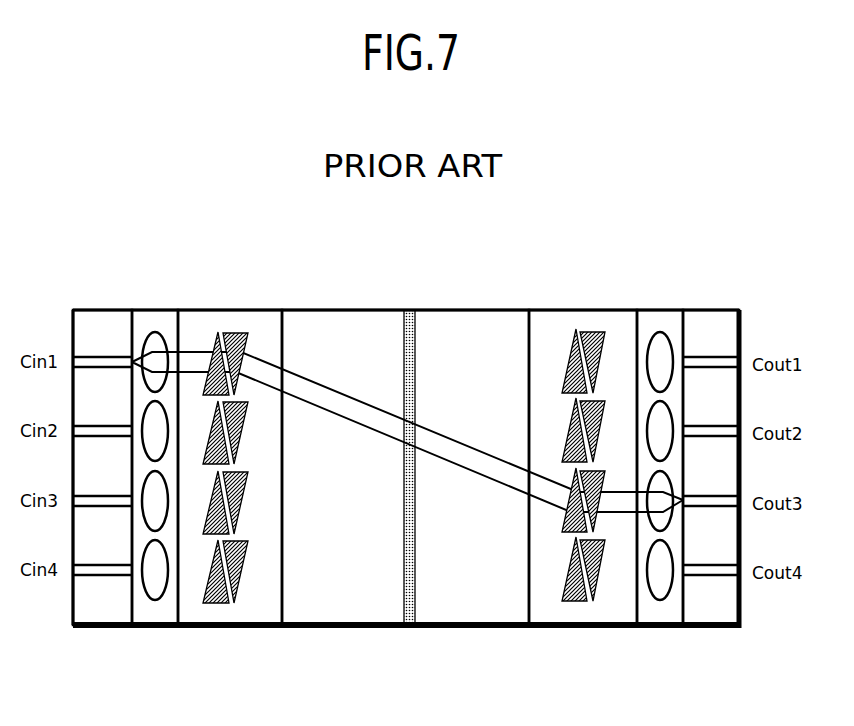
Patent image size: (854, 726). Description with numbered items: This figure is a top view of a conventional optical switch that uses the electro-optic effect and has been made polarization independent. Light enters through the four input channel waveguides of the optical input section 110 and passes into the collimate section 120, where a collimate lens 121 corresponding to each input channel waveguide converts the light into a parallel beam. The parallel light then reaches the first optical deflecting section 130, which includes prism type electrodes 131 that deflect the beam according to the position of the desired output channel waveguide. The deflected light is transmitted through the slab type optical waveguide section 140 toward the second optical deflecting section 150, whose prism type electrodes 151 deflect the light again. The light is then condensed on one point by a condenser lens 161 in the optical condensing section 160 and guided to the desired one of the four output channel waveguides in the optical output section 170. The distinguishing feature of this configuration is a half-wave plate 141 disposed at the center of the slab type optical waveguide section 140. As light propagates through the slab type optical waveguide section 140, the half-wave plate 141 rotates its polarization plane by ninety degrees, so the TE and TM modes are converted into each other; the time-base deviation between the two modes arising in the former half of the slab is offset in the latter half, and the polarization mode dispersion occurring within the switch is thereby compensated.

The optical input section 110 is at (73, 283).
The collimate section 120 is at (132, 283).
The first optical deflecting section 130 is at (178, 283).
The slab type optical waveguide section 140 is at (282, 283).
The second optical deflecting section 150 is at (529, 283).
The optical condensing section 160 is at (683, 283).
The optical output section 170 is at (683, 283).
The collimate lens 121 is at (152, 612).
The prism type electrode 131 is at (228, 612).
The half-wave plate 141 is at (407, 628).
The prism type electrode 151 is at (592, 614).
The condenser lens 161 is at (663, 614).